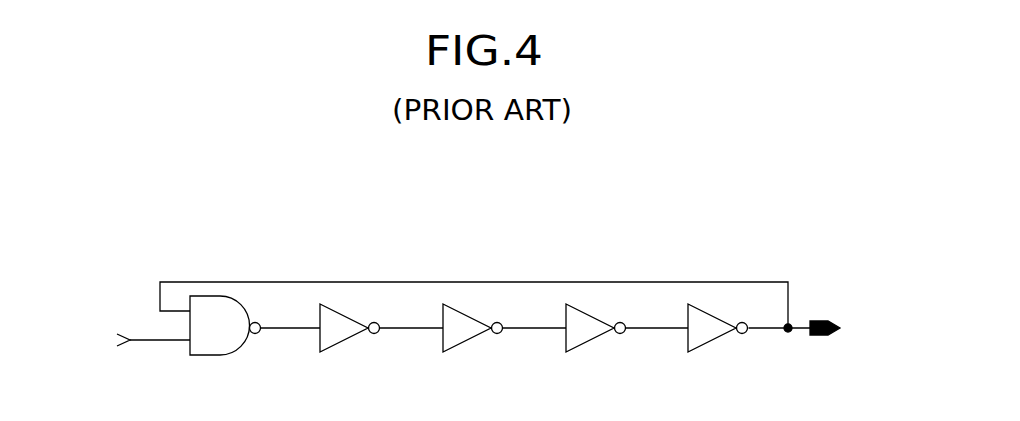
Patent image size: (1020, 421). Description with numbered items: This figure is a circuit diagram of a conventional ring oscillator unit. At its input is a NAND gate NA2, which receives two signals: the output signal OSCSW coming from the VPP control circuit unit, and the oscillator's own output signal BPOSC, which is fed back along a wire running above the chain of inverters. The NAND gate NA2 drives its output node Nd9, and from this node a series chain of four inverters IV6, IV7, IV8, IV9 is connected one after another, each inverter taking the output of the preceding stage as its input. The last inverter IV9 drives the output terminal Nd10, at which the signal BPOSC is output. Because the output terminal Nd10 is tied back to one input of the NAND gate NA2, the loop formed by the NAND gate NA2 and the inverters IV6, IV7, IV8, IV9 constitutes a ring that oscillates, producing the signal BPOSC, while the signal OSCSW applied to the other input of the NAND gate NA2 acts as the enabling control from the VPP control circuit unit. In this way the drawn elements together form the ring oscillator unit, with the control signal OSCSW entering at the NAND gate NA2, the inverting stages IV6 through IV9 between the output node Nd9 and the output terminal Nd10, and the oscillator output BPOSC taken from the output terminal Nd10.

The NAND gate NA2 is at (225, 339).
The inverter IV6 is at (381, 341).
The inverter IV7 is at (504, 341).
The inverter IV8 is at (627, 341).
The inverter IV9 is at (718, 341).
The output node Nd9 is at (294, 328).
The output terminal Nd10 is at (783, 328).
The output signal OSCSW is at (117, 341).
The output signal BPOSC is at (860, 331).